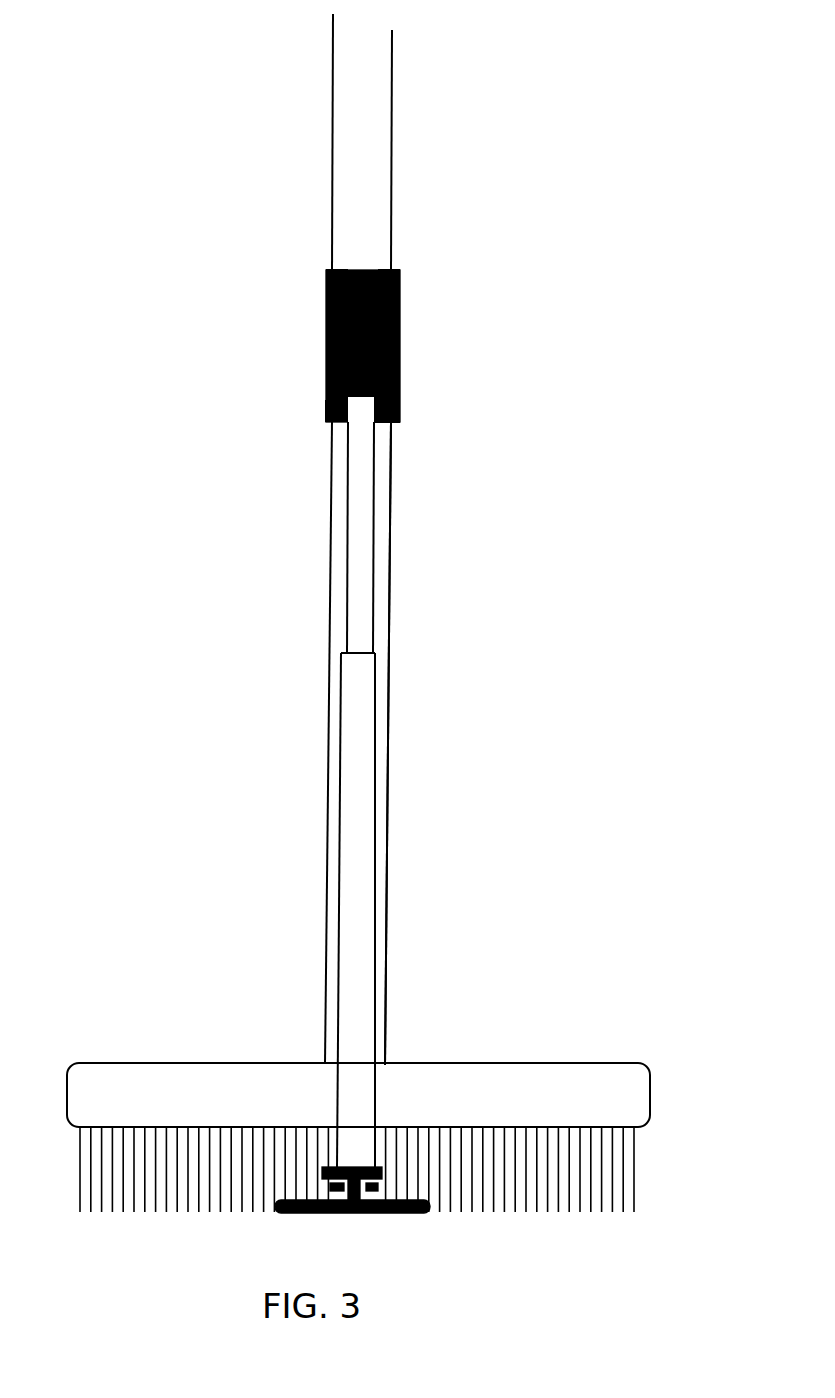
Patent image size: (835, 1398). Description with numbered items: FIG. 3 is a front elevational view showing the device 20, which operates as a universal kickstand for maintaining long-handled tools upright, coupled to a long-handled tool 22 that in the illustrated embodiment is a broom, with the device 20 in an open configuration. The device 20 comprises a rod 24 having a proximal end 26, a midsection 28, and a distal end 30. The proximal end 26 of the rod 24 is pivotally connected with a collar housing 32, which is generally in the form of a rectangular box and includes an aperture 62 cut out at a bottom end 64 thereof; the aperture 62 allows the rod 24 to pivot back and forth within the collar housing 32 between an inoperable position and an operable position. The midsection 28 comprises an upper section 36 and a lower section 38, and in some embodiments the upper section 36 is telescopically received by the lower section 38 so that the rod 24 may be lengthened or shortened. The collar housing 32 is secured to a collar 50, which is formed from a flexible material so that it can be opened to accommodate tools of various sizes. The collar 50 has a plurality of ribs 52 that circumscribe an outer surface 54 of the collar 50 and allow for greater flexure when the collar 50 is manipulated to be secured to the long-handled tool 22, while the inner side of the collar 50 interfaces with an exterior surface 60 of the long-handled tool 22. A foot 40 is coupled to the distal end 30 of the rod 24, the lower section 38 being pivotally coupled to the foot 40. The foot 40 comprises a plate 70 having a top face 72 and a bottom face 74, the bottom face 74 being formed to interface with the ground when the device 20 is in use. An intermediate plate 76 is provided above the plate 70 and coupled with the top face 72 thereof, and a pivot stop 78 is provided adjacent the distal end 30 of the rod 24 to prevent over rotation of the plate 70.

The device 20 is at (443, 365).
The long-handled tool 22 is at (300, 137).
The rod 24 is at (358, 735).
The proximal end 26 is at (325, 408).
The midsection 28 is at (357, 668).
The distal end 30 is at (405, 1210).
The collar housing 32 is at (370, 345).
The upper section 36 is at (360, 528).
The lower section 38 is at (355, 843).
The foot 40 is at (310, 1217).
The collar 50 is at (392, 270).
The ribs 52 is at (330, 272).
The outer surface 54 is at (325, 398).
The exterior surface 60 is at (383, 897).
The aperture 62 is at (388, 422).
The bottom end 64 is at (382, 383).
The plate 70 is at (430, 1207).
The top face 72 is at (412, 1200).
The bottom face 74 is at (355, 1213).
The intermediate plate 76 is at (320, 1187).
The pivot stop 78 is at (340, 1213).